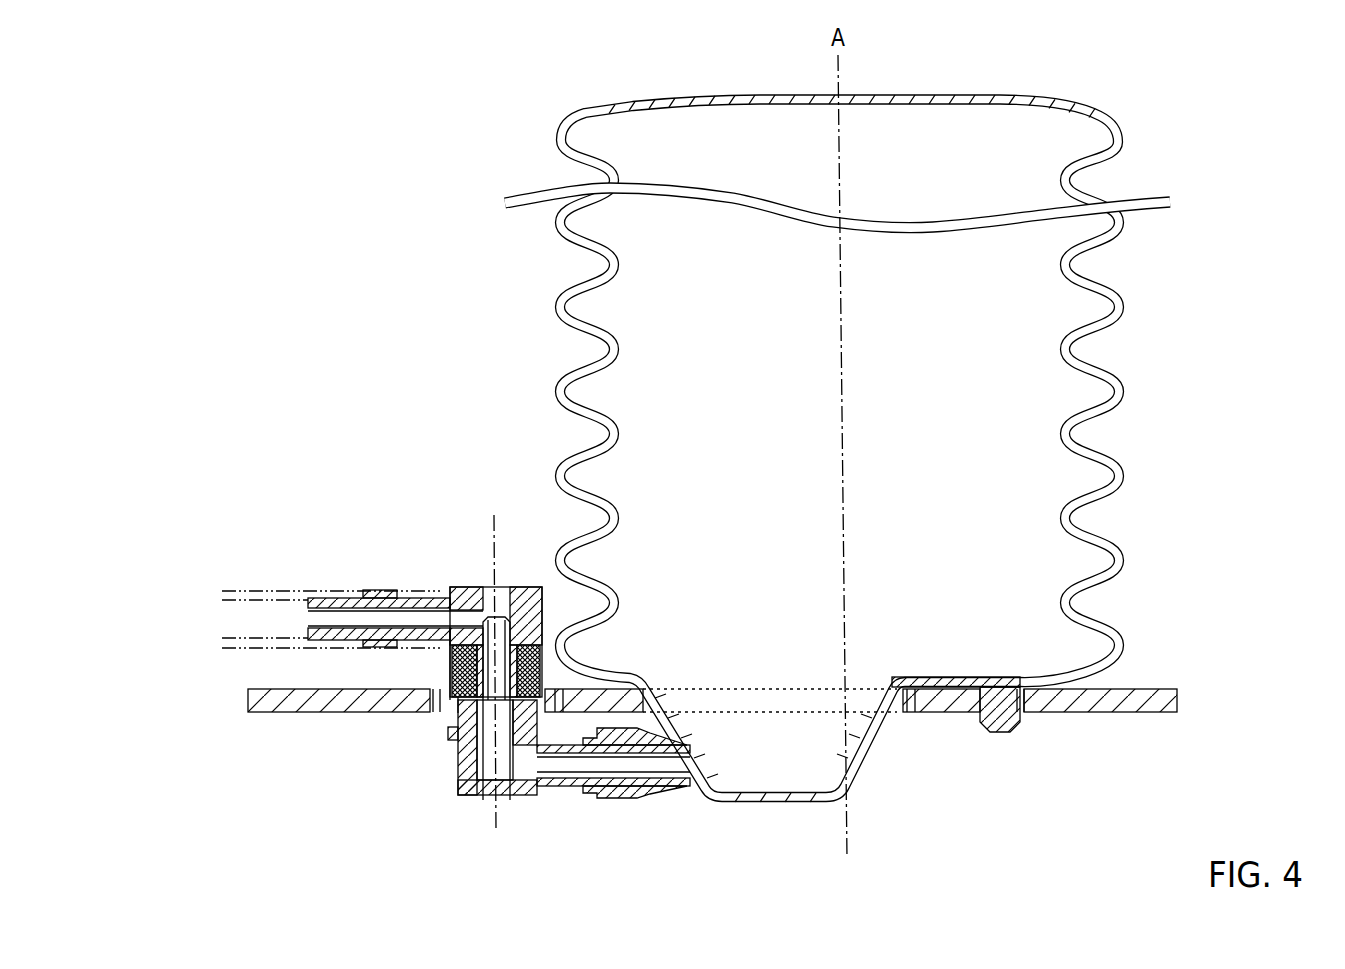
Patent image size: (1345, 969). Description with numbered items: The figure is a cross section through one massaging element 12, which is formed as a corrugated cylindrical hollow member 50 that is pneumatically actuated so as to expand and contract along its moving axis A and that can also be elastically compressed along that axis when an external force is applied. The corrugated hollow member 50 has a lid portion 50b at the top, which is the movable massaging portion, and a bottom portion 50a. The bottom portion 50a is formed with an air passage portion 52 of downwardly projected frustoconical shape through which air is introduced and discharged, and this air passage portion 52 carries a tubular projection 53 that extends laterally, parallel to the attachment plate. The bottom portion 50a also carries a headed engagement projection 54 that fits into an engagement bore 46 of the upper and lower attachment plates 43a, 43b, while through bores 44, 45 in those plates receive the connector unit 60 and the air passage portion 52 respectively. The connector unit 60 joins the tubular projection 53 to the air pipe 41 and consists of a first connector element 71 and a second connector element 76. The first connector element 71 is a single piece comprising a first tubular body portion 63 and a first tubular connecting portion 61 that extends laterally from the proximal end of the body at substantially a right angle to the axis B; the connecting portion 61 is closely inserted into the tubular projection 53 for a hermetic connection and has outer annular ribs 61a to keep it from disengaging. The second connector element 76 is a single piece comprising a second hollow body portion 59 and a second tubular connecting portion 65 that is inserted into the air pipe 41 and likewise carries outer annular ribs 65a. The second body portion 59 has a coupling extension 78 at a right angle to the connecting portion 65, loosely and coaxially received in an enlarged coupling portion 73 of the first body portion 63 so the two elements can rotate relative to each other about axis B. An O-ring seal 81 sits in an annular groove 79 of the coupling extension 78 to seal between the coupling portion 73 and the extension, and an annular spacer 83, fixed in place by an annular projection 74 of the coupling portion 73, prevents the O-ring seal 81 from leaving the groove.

The massaging element 12 is at (942, 900).
The air pipe 41 is at (256, 590).
The upper attachment plate 43a is at (712, 738).
The lower attachment plate 43b is at (272, 716).
The through bore 44 is at (450, 722).
The through bore 45 is at (908, 698).
The engagement bore 46 is at (988, 725).
The corrugated cylindrical hollow member 50 is at (833, 462).
The bottom portion 50a is at (943, 690).
The lid portion 50b is at (862, 97).
The air passage portion 52 is at (800, 800).
The tubular projection 53 is at (692, 800).
The headed engagement projection 54 is at (1012, 694).
The second hollow body portion 59 is at (517, 586).
The connector unit 60 is at (499, 661).
The first tubular connecting portion 61 is at (611, 805).
The outer annular rib 61a is at (640, 790).
The first tubular body portion 63 is at (449, 727).
The second tubular connecting portion 65 is at (395, 577).
The outer annular rib 65a is at (395, 593).
The first connector element 71 is at (477, 796).
The enlarged coupling portion 73 is at (437, 718).
The annular projection 74 is at (450, 655).
The second connector element 76 is at (468, 586).
The coupling extension 78 is at (512, 638).
The annular groove 79 is at (497, 672).
The O-ring seal 81 is at (540, 681).
The annular spacer 83 is at (453, 673).